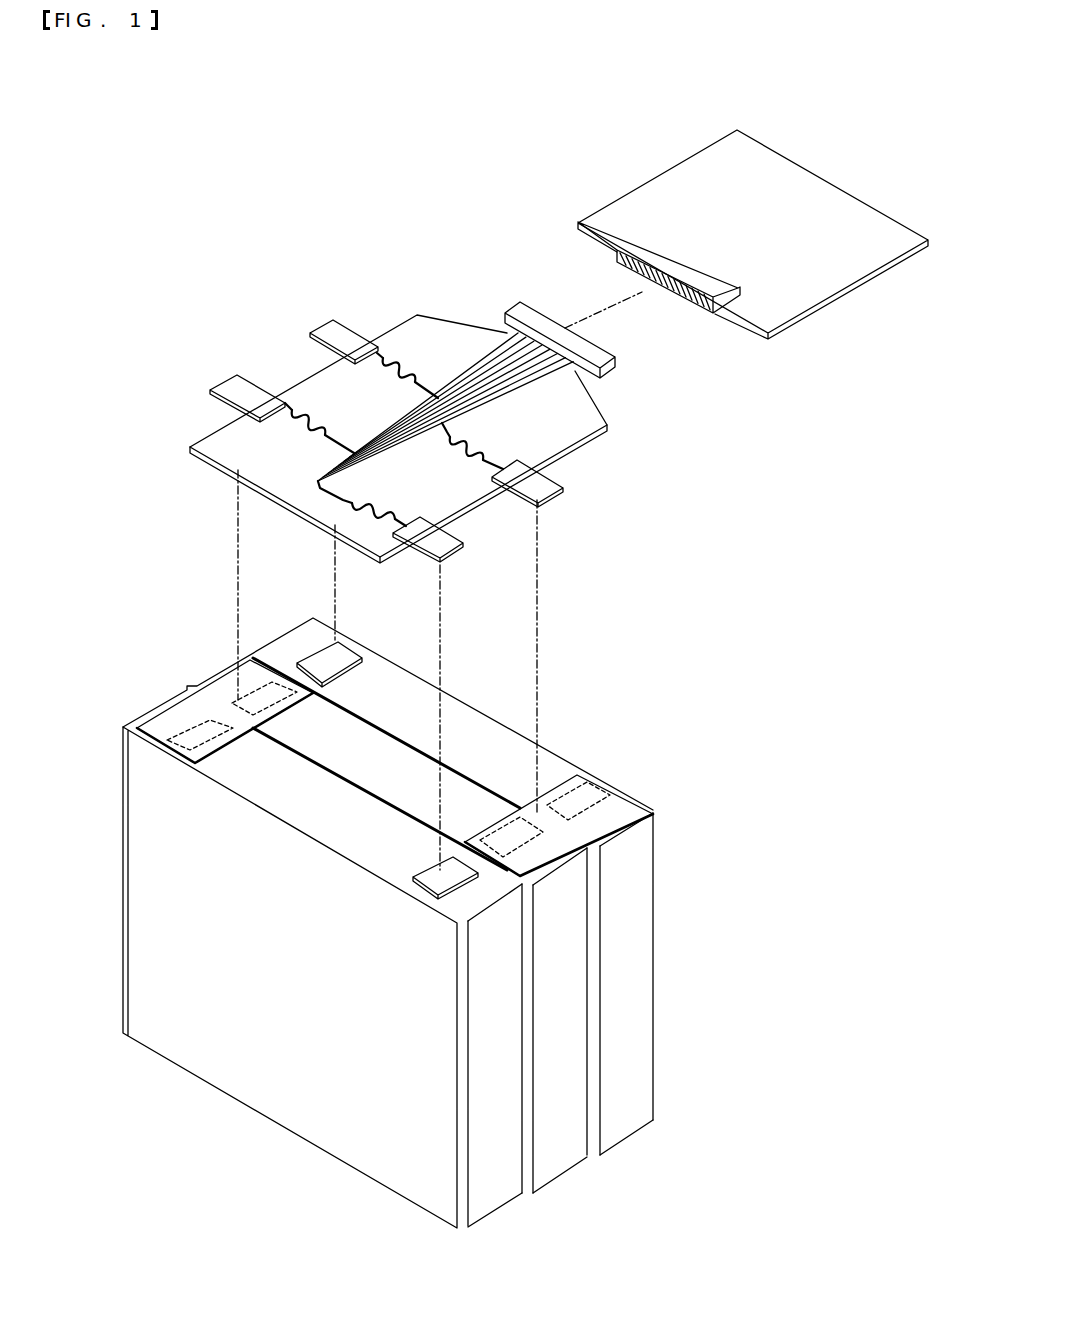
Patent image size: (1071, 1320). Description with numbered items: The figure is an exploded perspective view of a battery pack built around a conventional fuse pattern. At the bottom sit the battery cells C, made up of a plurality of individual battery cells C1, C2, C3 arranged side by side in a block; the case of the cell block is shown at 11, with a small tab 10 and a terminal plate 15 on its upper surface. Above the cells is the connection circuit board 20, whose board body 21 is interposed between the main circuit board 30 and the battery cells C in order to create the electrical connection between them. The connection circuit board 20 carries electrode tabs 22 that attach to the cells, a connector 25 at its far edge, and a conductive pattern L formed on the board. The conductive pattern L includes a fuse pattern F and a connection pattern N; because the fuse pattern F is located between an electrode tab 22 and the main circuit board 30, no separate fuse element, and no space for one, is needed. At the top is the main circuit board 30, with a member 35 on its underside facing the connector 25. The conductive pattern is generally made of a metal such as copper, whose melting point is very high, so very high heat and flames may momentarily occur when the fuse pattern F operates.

The tab on cell 10 is at (433, 882).
The cell case 11 is at (135, 840).
The terminal plate 15 is at (620, 805).
The connection circuit board 20 is at (391, 399).
The circuit board 21 is at (228, 459).
The electrode tab 22 is at (235, 375).
The connector 25 is at (520, 300).
The main circuit board 30 is at (672, 156).
The adhesive member 35 is at (646, 240).
The battery cells C is at (378, 894).
The battery cell C1 is at (150, 705).
The battery cell C2 is at (208, 668).
The battery cell C3 is at (295, 630).
The conductive pattern L is at (670, 396).
The connection pattern N is at (533, 385).
The fuse pattern F is at (480, 450).